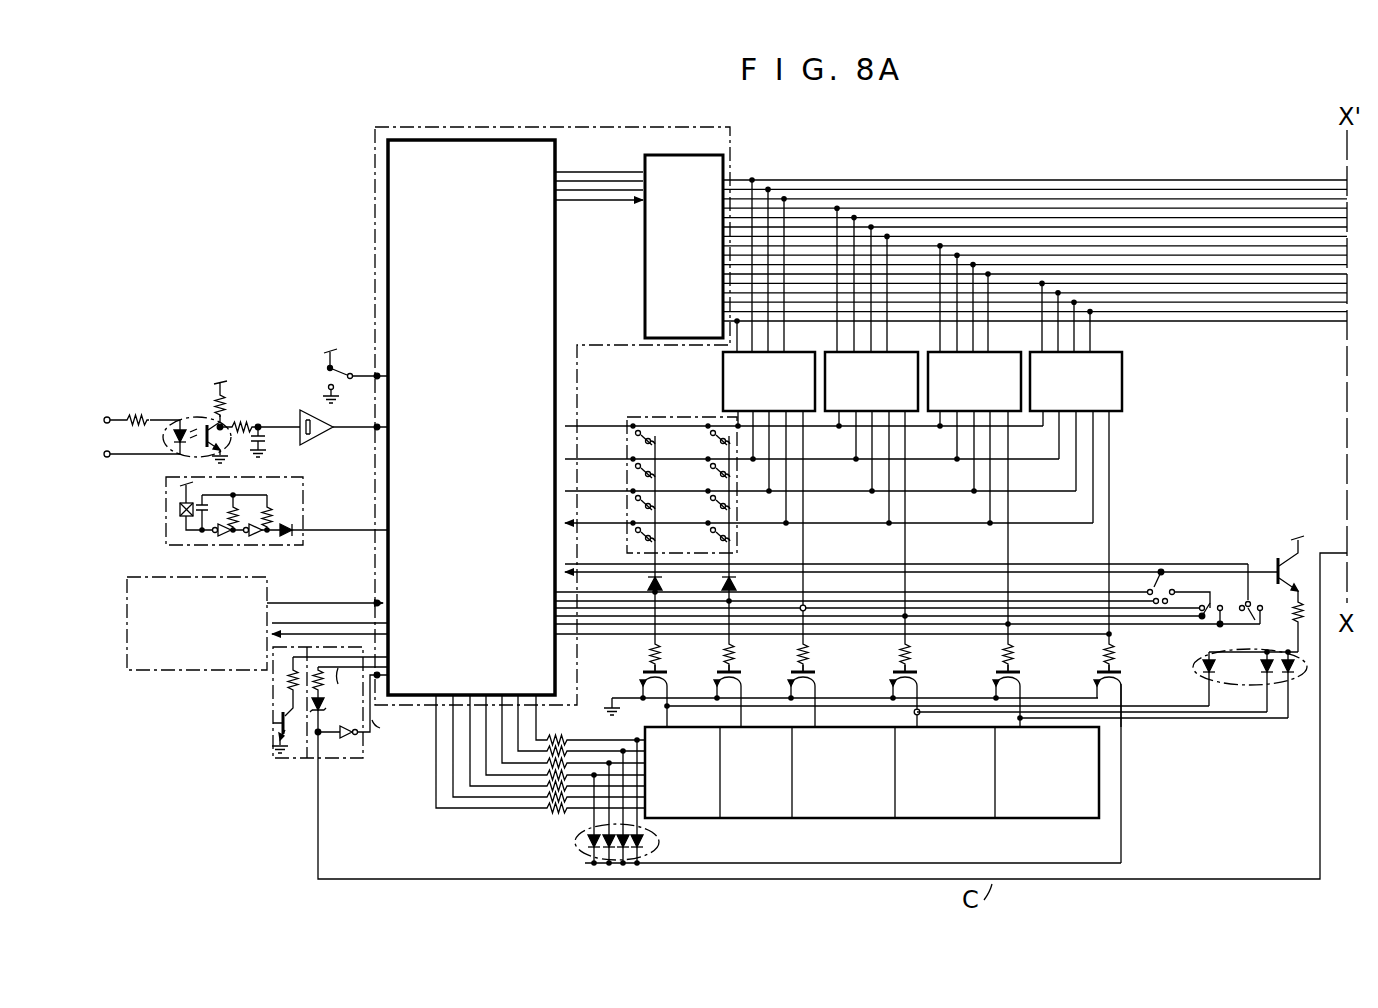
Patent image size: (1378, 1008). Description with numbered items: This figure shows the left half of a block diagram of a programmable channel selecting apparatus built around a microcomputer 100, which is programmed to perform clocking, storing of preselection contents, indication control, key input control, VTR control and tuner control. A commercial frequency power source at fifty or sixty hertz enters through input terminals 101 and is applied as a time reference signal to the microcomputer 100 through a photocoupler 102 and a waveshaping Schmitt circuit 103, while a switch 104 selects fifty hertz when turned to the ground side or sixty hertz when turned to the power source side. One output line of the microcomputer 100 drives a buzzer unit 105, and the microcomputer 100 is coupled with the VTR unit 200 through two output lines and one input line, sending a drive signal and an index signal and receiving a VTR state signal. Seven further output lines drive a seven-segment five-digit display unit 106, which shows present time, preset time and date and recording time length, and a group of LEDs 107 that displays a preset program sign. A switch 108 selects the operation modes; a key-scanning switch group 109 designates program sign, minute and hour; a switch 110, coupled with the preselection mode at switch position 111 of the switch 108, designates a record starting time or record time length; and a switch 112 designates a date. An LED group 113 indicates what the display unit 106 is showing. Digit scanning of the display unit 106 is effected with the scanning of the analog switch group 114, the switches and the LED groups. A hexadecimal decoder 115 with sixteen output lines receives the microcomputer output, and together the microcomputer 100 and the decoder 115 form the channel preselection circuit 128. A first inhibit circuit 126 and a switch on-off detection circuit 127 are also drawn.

The microcomputer 100 is at (556, 146).
The input terminals 101 is at (104, 438).
The photocoupler 102 is at (197, 416).
The waveshaping Schmitt circuit 103 is at (300, 410).
The switch 104 is at (343, 352).
The buzzer unit 105 is at (158, 512).
The 5-digit display unit 106 is at (804, 824).
The group of LEDs 107 is at (570, 840).
The switch 108 is at (1164, 568).
The switch group 109 is at (686, 417).
The switch 110 is at (1222, 574).
The switch position 111 is at (1181, 572).
The switch 112 is at (1256, 612).
The LED group 113 is at (1196, 664).
The analog switch group 114 is at (1122, 380).
The hexadecimal decoder 115 is at (661, 164).
The first inhibit circuit 126 is at (272, 717).
The switch on-off detection circuit 127 is at (298, 730).
The channel preselection circuit 128 is at (587, 127).
The VTR unit 200 is at (168, 577).